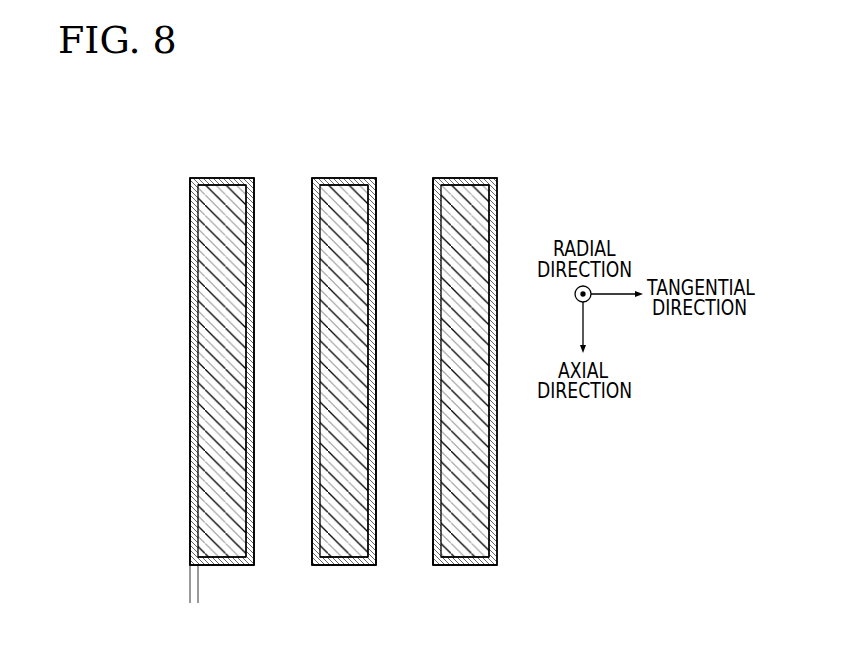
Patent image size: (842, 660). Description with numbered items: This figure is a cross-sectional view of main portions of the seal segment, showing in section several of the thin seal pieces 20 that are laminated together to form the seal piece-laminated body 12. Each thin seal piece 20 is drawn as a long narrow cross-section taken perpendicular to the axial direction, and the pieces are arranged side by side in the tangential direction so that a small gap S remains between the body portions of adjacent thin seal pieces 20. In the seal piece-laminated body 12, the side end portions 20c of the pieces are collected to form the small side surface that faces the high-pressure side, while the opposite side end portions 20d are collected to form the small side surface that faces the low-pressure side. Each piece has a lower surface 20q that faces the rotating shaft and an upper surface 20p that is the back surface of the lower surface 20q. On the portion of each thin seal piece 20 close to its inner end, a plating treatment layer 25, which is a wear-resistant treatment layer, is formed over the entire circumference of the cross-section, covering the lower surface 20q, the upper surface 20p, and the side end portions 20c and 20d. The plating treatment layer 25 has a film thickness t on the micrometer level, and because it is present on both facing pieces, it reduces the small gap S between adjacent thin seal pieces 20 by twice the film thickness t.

The seal piece-laminated body 12 is at (573, 143).
The thin seal piece 20 is at (218, 153).
The side end portion 20c is at (224, 185).
The side end portion 20d is at (235, 561).
The upper surface 20p is at (190, 207).
The lower surface 20q is at (246, 213).
The plating treatment layer 25 is at (222, 566).
The small gap S is at (289, 384).
The film thickness t is at (216, 595).